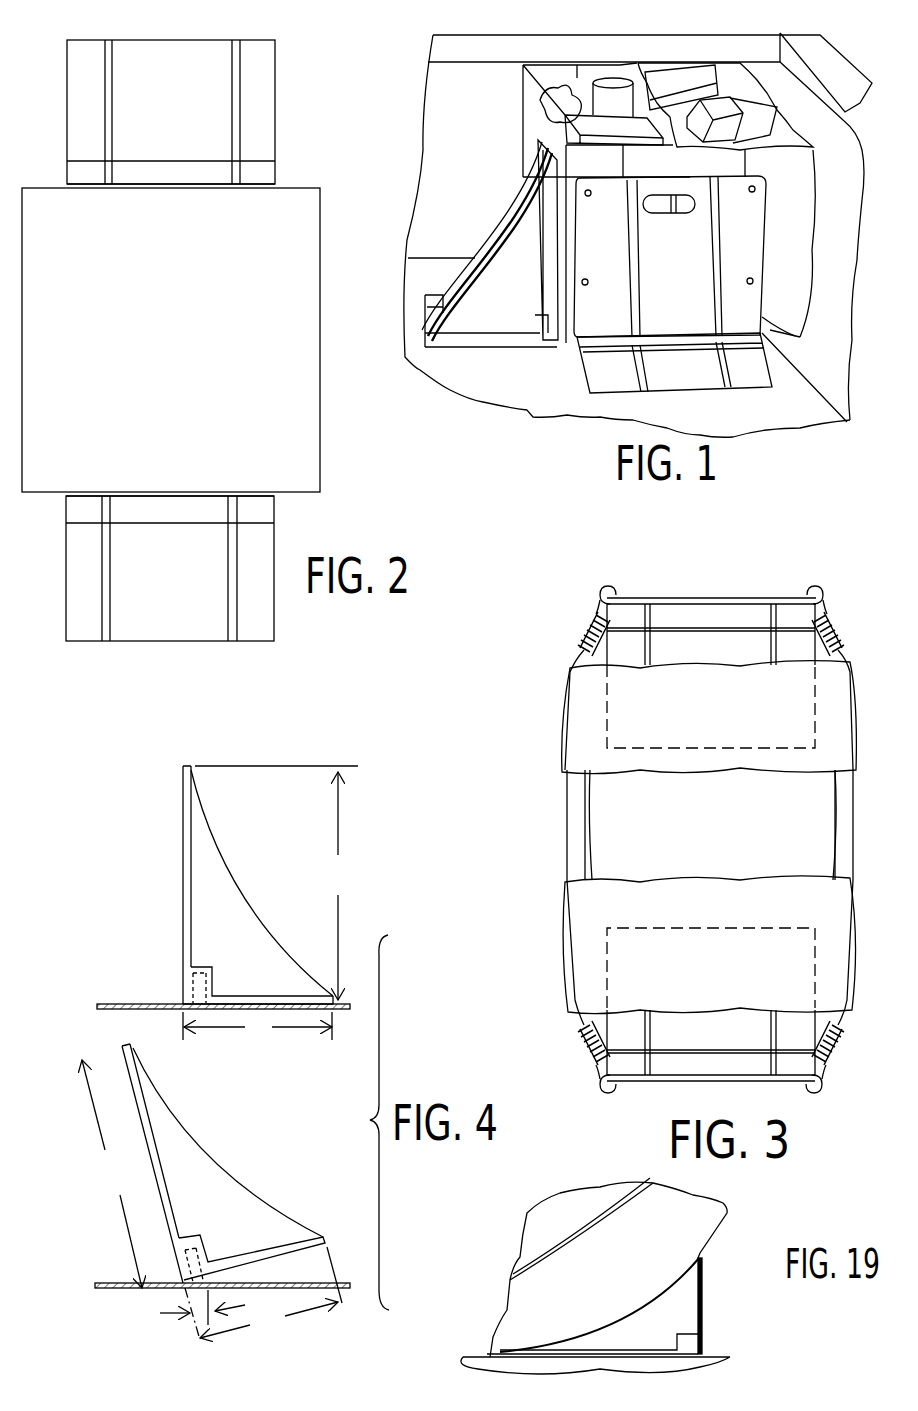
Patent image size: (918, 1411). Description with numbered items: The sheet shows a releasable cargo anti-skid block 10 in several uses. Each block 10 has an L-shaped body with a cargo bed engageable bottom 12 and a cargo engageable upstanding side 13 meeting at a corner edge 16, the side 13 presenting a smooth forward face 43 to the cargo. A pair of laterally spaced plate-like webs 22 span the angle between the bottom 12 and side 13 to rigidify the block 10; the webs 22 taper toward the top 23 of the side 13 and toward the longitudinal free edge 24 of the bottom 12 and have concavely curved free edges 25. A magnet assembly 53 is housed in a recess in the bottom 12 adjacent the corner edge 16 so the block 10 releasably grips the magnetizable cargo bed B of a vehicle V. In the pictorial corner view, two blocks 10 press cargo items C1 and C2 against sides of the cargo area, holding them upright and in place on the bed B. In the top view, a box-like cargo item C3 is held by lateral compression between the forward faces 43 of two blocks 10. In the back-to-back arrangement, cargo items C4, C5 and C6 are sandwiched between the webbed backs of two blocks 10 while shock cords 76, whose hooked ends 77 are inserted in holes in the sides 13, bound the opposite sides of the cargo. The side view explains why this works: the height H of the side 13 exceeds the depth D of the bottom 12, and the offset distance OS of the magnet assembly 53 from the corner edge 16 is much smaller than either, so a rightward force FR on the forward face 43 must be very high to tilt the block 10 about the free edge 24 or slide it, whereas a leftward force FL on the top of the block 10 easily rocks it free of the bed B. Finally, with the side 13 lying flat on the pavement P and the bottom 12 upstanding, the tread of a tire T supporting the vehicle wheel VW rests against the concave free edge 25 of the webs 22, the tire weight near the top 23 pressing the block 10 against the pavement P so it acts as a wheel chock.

In FIG. 2, the cargo anti-skid block 10 is at (282, 82).
In FIG. 1, the cargo anti-skid block 10 is at (495, 215).
In FIG. 3, the cargo anti-skid block 10 is at (745, 598).
In FIG. 4, the cargo anti-skid block 10 is at (232, 826).
In FIG. 19, the cargo anti-skid block 10 is at (704, 1307).
In FIG. 2, the bottom 12 is at (163, 56).
In FIG. 1, the bottom 12 is at (752, 378).
In FIG. 3, the bottom 12 is at (704, 843).
In FIG. 4, the bottom 12 is at (276, 996).
In FIG. 19, the bottom 12 is at (705, 1282).
In FIG. 2, the upstanding side 13 is at (245, 182).
In FIG. 1, the upstanding side 13 is at (740, 225).
In FIG. 3, the upstanding side 13 is at (650, 632).
In FIG. 4, the upstanding side 13 is at (183, 854).
In FIG. 19, the upstanding side 13 is at (623, 1355).
In FIG. 4, the corner edge 16 is at (180, 1292).
In FIG. 3, the webs 22 is at (652, 628).
In FIG. 4, the webs 22 is at (228, 907).
In FIG. 19, the webs 22 is at (645, 1332).
In FIG. 19, the top of the side 23 is at (545, 1354).
In FIG. 2, the longitudinal free edge 24 is at (200, 40).
In FIG. 1, the longitudinal free edge 24 is at (628, 393).
In FIG. 4, the longitudinal free edge 24 is at (336, 998).
In FIG. 4, the concavely curved free edges 25 is at (230, 868).
In FIG. 19, the concavely curved free edges 25 is at (680, 1284).
In FIG. 2, the forward face 43 is at (163, 190).
In FIG. 4, the magnet assembly 53 is at (200, 970).
In FIG. 3, the shock cords 76 is at (567, 856).
In FIG. 3, the hooked ends 77 is at (603, 594).
In FIG. 1, the cargo item C1 is at (553, 72).
In FIG. 1, the cargo item C2 is at (652, 68).
In FIG. 2, the box-like cargo item C3 is at (283, 428).
In FIG. 3, the cargo item C4 is at (580, 707).
In FIG. 3, the cargo item C5 is at (597, 823).
In FIG. 3, the cargo item C6 is at (578, 924).
In FIG. 1, the vehicle V is at (425, 55).
In FIG. 19, the vehicle wheel VW is at (535, 1242).
In FIG. 19, the tire T is at (520, 1314).
In FIG. 19, the pavement P is at (480, 1366).
In FIG. 4, the cargo bed B is at (140, 1285).
In FIG. 4, the rightward force FR is at (175, 782).
In FIG. 4, the leftward force FL is at (158, 1058).
In FIG. 4, the height H is at (216, 1030).
In FIG. 4, the depth D is at (262, 1175).
In FIG. 4, the offset distance OS is at (180, 1314).